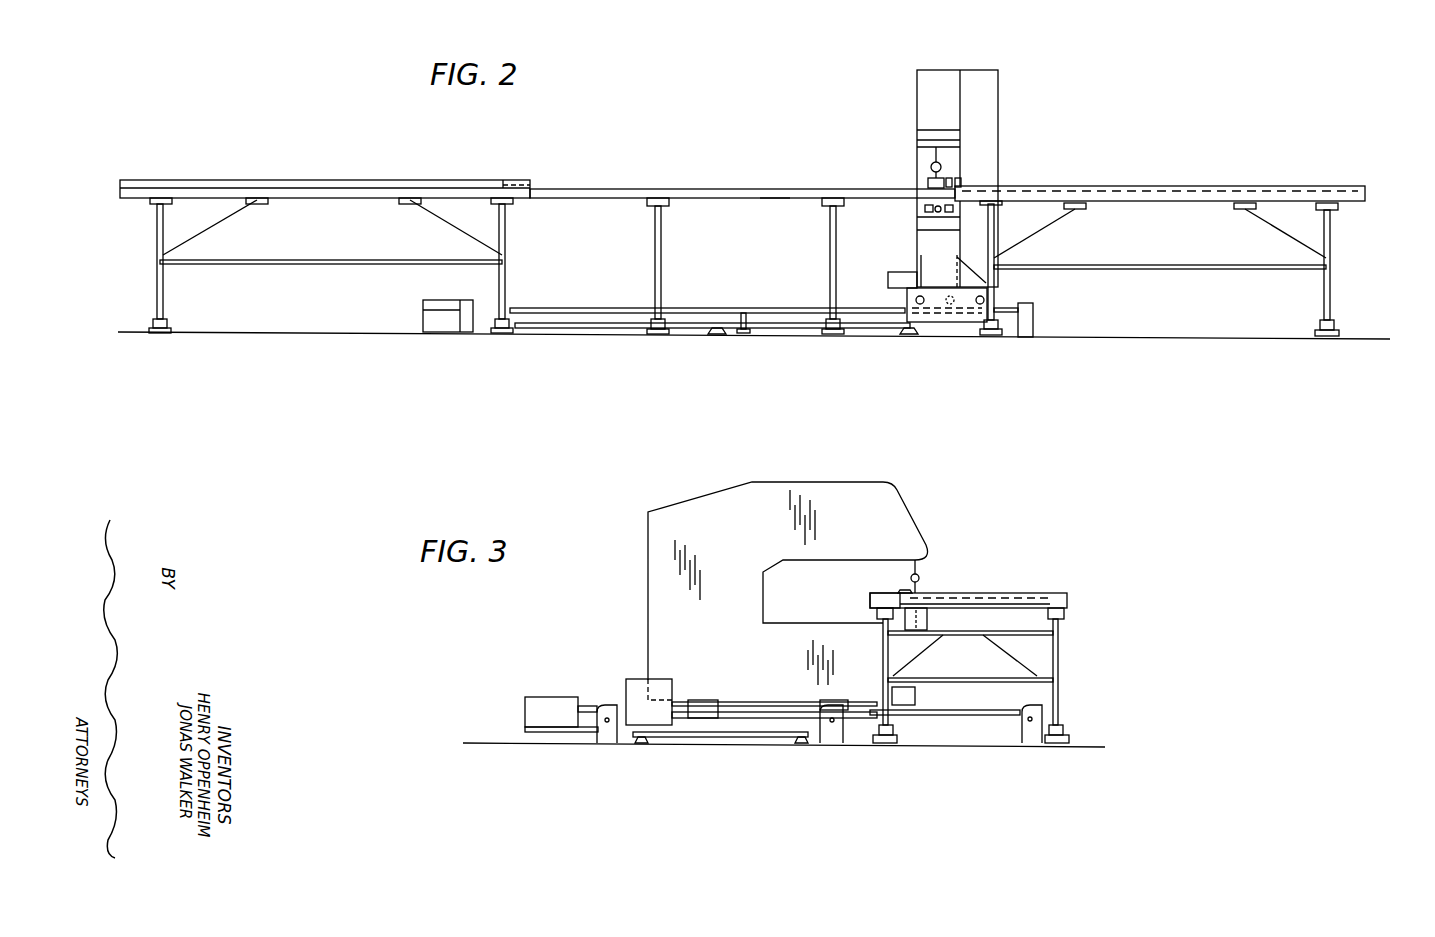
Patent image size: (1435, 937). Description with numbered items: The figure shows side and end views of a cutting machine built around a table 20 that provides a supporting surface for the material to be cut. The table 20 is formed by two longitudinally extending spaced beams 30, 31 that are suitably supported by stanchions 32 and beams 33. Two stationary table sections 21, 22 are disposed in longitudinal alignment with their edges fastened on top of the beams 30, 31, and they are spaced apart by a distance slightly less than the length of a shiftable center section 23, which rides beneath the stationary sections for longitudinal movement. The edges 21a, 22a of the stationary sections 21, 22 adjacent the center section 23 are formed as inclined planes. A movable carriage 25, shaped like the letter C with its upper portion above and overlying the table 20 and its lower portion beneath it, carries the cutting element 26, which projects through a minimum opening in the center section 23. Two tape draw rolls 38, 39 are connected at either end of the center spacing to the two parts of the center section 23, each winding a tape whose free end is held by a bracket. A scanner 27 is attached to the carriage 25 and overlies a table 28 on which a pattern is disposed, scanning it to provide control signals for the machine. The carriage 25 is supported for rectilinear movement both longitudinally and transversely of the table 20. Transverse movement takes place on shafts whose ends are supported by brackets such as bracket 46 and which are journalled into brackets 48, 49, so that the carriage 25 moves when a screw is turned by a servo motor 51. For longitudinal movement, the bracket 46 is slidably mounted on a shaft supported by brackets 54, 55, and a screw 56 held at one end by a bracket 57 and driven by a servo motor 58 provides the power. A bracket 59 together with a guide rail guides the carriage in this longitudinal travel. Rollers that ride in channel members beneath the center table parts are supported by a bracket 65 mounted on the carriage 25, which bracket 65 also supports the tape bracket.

In FIG. 2, the table 20 is at (1398, 175).
In FIG. 3, the table 20 is at (1112, 583).
In FIG. 2, the stationary table section 21 is at (388, 186).
In FIG. 2, the edge of section 21 21a is at (530, 185).
In FIG. 2, the stationary table section 22 is at (1150, 186).
In FIG. 2, the edge of section 22 22a is at (958, 186).
In FIG. 2, the shiftable table section 23 is at (625, 189).
In FIG. 2, the carriage 25 is at (1018, 42).
In FIG. 3, the carriage 25 is at (912, 453).
In FIG. 2, the cutting element 26 is at (928, 182).
In FIG. 3, the cutting element 26 is at (920, 586).
In FIG. 2, the scanner 27 is at (897, 272).
In FIG. 3, the scanner 27 is at (634, 679).
In FIG. 2, the table 28 is at (590, 323).
In FIG. 3, the beam 30 is at (877, 604).
In FIG. 2, the beam 31 is at (773, 198).
In FIG. 3, the beam 31 is at (1064, 614).
In FIG. 2, the stanchion 32 is at (158, 255).
In FIG. 3, the stanchion 32 is at (884, 648).
In FIG. 2, the beam 33 is at (222, 222).
In FIG. 3, the beam 33 is at (1003, 648).
In FIG. 3, the tape draw roll 38 is at (900, 591).
In FIG. 3, the tape draw roll 39 is at (1025, 593).
In FIG. 2, the bracket 46 is at (940, 322).
In FIG. 3, the bracket 48 is at (703, 705).
In FIG. 3, the bracket 49 is at (915, 697).
In FIG. 3, the servo motor 51 is at (528, 705).
In FIG. 3, the bracket 54 is at (1032, 738).
In FIG. 3, the bracket 55 is at (612, 738).
In FIG. 2, the screw 56 is at (770, 290).
In FIG. 2, the bracket 57 is at (1033, 322).
In FIG. 2, the servo motor 58 is at (423, 308).
In FIG. 3, the servo motor 58 is at (835, 738).
In FIG. 3, the bracket 59 is at (835, 702).
In FIG. 3, the bracket 65 is at (927, 622).